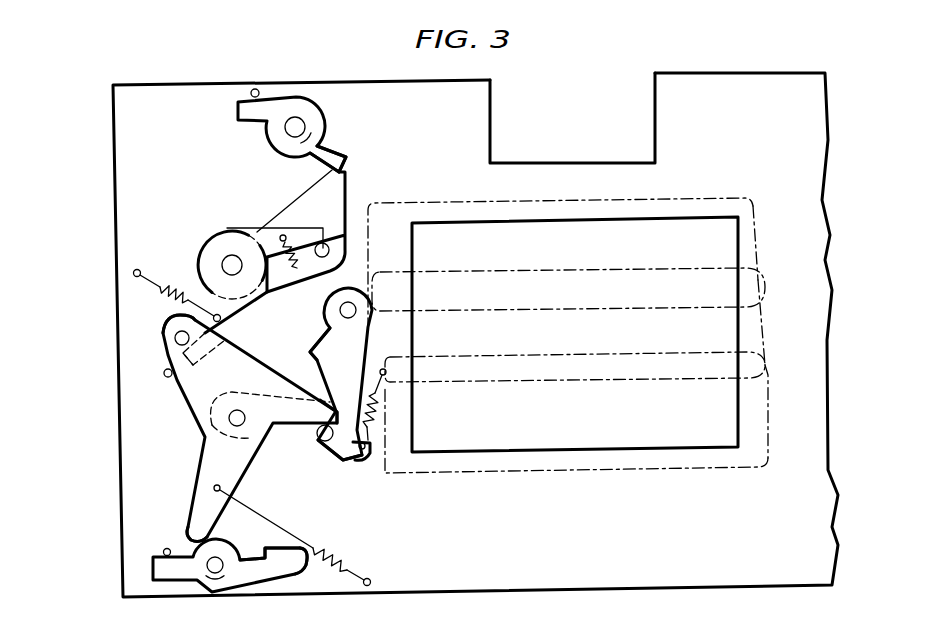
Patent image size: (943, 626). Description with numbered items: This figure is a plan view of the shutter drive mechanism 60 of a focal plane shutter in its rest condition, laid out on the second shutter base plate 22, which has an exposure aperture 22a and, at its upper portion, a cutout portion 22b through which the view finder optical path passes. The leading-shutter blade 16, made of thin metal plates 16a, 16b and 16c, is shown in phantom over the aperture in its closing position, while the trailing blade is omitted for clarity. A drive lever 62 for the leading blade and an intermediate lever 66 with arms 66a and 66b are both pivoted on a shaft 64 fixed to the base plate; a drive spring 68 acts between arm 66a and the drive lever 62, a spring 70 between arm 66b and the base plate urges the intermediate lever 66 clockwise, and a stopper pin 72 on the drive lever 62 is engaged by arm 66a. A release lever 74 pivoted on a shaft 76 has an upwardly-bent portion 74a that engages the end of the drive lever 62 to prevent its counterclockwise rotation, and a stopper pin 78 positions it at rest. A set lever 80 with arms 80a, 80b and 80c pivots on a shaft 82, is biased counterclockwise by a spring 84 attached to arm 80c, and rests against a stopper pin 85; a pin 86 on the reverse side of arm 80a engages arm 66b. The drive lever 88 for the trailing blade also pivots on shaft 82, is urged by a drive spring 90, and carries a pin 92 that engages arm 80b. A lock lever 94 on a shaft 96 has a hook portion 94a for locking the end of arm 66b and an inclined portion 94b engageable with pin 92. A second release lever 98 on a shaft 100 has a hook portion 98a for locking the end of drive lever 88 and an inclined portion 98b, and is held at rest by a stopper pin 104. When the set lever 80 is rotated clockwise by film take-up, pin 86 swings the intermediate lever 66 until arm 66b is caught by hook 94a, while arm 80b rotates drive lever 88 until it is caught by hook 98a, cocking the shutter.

The leading-shutter blade 16 is at (749, 194).
The thin metal plate 16a is at (757, 240).
The thin metal plate 16b is at (762, 330).
The thin metal plate 16c is at (768, 410).
The second shutter base plate 22 is at (712, 82).
The exposure aperture 22a is at (571, 223).
The cutout portion 22b is at (655, 112).
The shutter drive mechanism 60 is at (213, 219).
The drive lever 62 is at (340, 195).
The shaft 64 is at (226, 258).
The intermediate lever 66 is at (228, 318).
The arm 66a is at (310, 232).
The arm 66b is at (182, 355).
The drive spring 68 is at (297, 272).
The spring 70 is at (172, 282).
The stopper pin 72 is at (330, 250).
The release lever 74 is at (277, 137).
The upwardly-bent portion 74a is at (347, 158).
The shaft 76 is at (303, 124).
The stopper pin 78 is at (258, 89).
The set lever 80 is at (203, 403).
The arm 80a is at (172, 315).
The arm 80b is at (300, 397).
The arm 80c is at (193, 527).
The shaft 82 is at (229, 423).
The spring 84 is at (340, 550).
The stopper pin 85 is at (163, 377).
The pin 86 is at (175, 338).
The drive lever 88 is at (358, 458).
The drive spring 90 is at (372, 418).
The pin 92 is at (323, 441).
The lock lever 94 is at (368, 345).
The hook portion 94a is at (308, 358).
The inclined portion 94b is at (343, 456).
The shaft 96 is at (356, 310).
The release lever 98 is at (153, 568).
The hook portion 98a is at (265, 553).
The inclined portion 98b is at (307, 562).
The shaft 100 is at (210, 573).
The stopper pin 104 is at (163, 550).